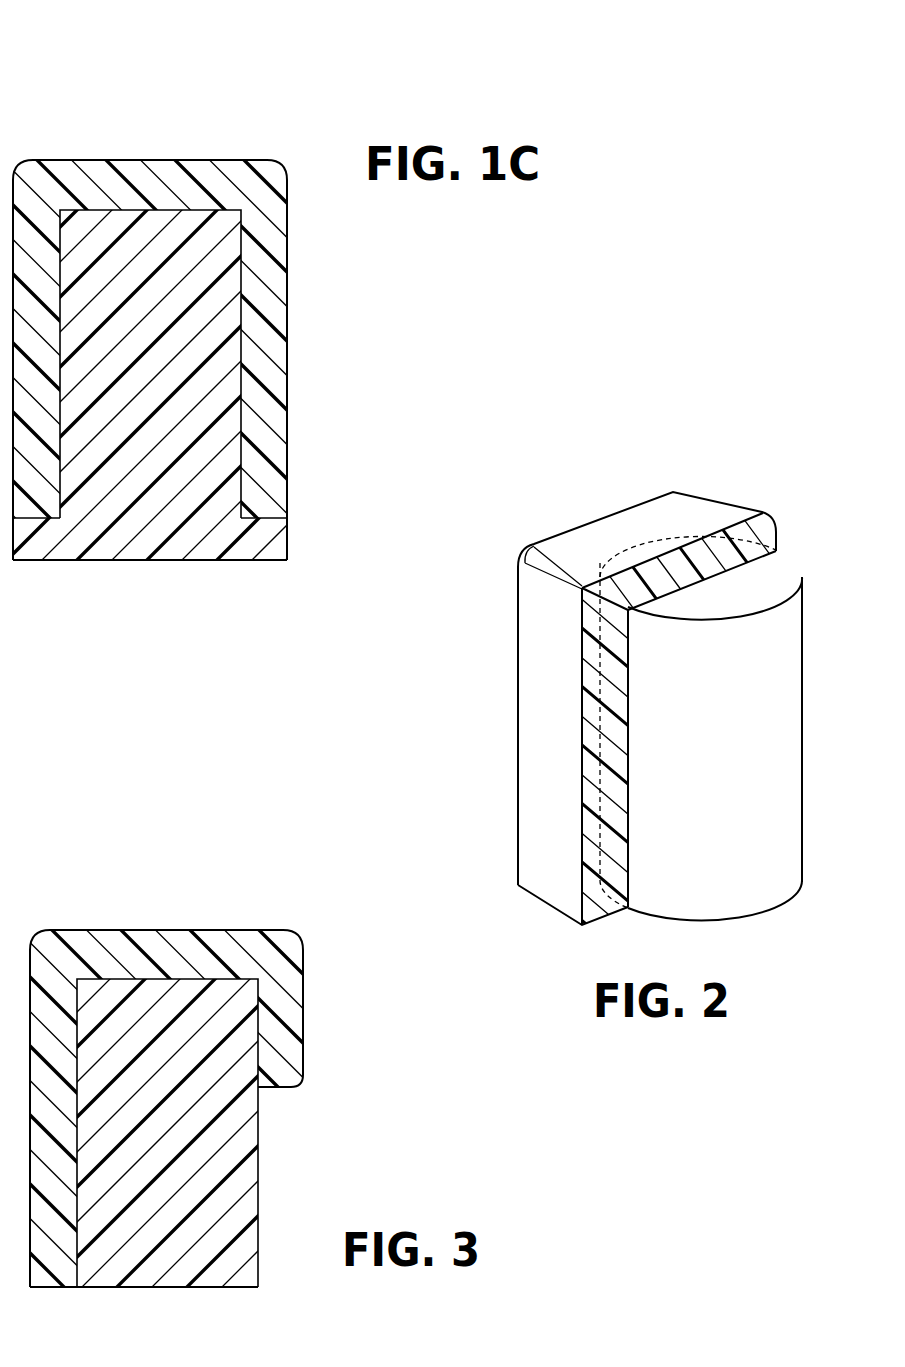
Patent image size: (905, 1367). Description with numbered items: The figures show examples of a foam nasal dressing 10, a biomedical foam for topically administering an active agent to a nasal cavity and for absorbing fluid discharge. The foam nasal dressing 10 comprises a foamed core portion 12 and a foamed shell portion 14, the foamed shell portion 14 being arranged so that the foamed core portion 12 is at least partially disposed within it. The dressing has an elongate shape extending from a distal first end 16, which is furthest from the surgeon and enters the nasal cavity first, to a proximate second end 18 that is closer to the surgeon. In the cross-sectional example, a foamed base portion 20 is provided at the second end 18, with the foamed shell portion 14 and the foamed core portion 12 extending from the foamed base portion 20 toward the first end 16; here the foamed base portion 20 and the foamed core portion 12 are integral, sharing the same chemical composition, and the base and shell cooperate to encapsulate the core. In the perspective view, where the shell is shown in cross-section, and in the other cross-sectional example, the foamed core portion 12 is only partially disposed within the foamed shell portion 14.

In FIG. 1C, the foam nasal dressing 10 is at (135, 98).
In FIG. 2, the foam nasal dressing 10 is at (502, 544).
In FIG. 3, the foam nasal dressing 10 is at (195, 851).
In FIG. 1C, the foamed core portion 12 is at (233, 248).
In FIG. 2, the foamed core portion 12 is at (775, 697).
In FIG. 3, the foamed core portion 12 is at (230, 1125).
In FIG. 1C, the foamed shell portion 14 is at (278, 362).
In FIG. 2, the foamed shell portion 14 is at (765, 522).
In FIG. 3, the foamed shell portion 14 is at (292, 992).
In FIG. 1C, the first end 16 is at (241, 139).
In FIG. 2, the first end 16 is at (685, 478).
In FIG. 3, the first end 16 is at (107, 914).
In FIG. 1C, the second end 18 is at (137, 578).
In FIG. 2, the second end 18 is at (773, 923).
In FIG. 3, the second end 18 is at (211, 1303).
In FIG. 1C, the foamed base portion 20 is at (243, 562).